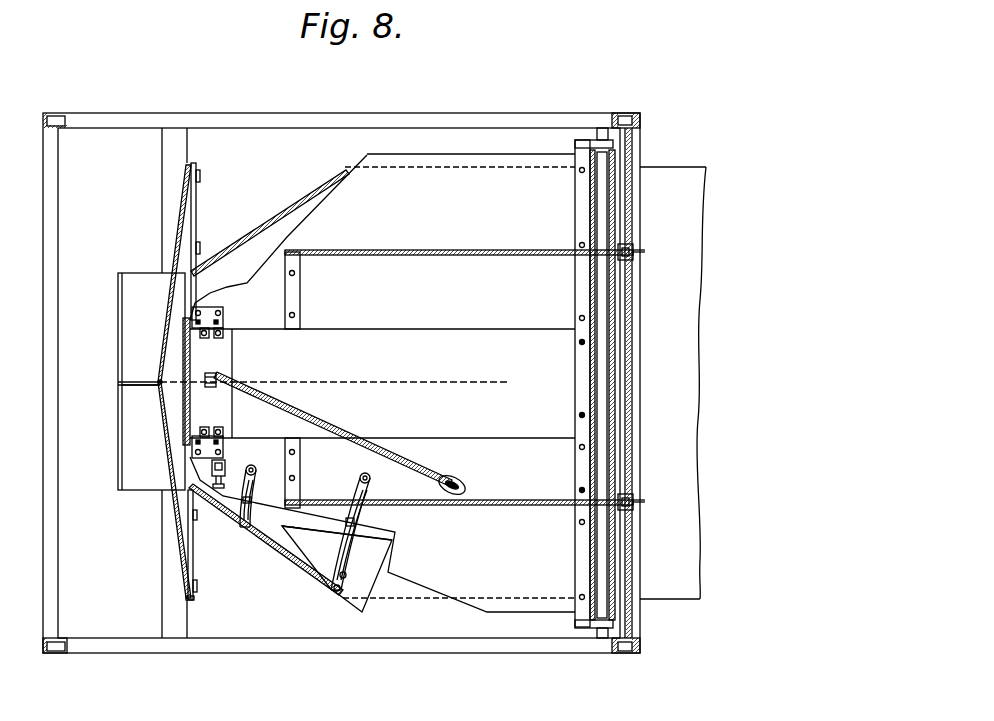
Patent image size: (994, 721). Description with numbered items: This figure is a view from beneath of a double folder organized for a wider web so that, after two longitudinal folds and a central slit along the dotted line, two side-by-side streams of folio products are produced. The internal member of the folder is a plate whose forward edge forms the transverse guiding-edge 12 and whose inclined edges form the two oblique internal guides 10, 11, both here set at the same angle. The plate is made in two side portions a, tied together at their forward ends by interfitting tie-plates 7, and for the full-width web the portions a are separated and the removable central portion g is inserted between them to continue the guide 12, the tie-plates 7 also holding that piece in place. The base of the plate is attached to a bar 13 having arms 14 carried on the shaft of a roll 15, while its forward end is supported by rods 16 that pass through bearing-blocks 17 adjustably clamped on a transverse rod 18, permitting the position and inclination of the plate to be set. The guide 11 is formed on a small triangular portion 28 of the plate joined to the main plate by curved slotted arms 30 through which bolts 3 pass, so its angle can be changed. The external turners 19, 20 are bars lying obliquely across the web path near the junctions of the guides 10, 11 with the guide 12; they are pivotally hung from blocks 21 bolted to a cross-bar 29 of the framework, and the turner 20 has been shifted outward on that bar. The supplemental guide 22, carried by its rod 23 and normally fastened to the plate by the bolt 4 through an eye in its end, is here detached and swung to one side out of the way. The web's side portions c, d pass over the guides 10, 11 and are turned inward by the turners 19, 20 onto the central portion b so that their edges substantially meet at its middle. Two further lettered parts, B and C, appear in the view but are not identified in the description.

The bolts 3 is at (257, 470).
The bolt 4 is at (225, 482).
The tie-plates 7 is at (225, 322).
The internal guide 10 is at (276, 220).
The internal guide 11 is at (318, 577).
The internal guide 12 is at (190, 398).
The bar 13 is at (575, 293).
The arms 14 is at (590, 143).
The roll 15 is at (604, 543).
The rods 16 is at (507, 251).
The bearing-blocks 17 is at (634, 249).
The transverse rod 18 is at (630, 296).
The external turner 19 is at (197, 233).
The external turner 20 is at (195, 533).
The blocks 21 is at (191, 598).
The supplemental internal guide 22 is at (217, 379).
The rod 23 is at (362, 447).
The triangular portion 28 is at (326, 580).
The cross-bar 29 is at (174, 381).
The curved slotted arms 30 is at (256, 490).
The side portions of plate a is at (382, 383).
The central portion of web b is at (118, 383).
The side portion of web c is at (141, 407).
The side portion of web d is at (151, 381).
The central portion of plate g is at (211, 383).
The table B is at (469, 376).
The plate C is at (334, 539).